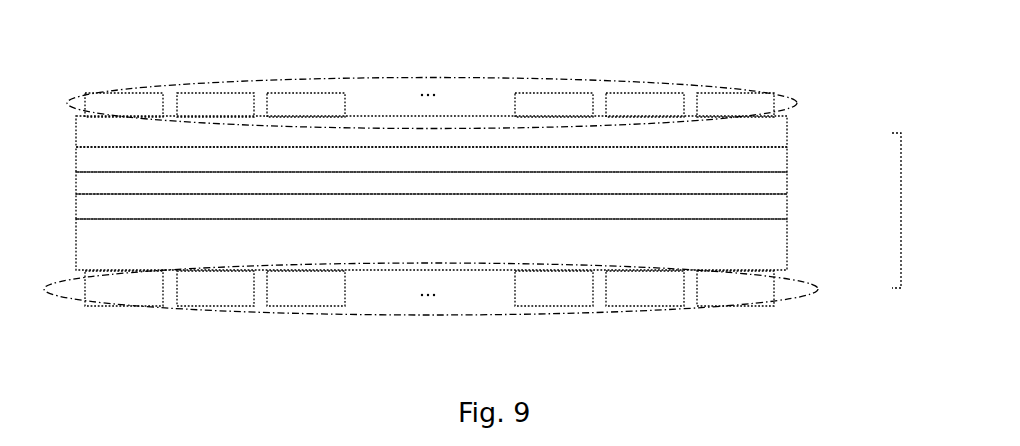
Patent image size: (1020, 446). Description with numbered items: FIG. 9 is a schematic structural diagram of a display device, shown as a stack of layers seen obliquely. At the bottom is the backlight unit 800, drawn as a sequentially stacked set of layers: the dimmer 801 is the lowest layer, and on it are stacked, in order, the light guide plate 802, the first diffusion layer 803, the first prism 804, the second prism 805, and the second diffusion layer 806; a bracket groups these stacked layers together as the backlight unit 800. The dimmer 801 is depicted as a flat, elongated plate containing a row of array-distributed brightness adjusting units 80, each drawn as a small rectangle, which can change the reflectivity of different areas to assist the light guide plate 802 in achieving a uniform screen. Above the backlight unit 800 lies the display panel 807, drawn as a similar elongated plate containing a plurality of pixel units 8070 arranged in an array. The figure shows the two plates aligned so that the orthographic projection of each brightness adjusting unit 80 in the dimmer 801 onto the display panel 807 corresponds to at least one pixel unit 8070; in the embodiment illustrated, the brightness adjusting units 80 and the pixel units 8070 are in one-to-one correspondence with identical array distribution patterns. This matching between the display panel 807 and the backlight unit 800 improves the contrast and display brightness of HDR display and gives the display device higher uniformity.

The brightness adjusting unit 80 is at (738, 292).
The backlight unit 800 is at (901, 211).
The dimmer 801 is at (820, 288).
The light guide plate 802 is at (768, 241).
The first diffusion layer 803 is at (772, 205).
The first prism 804 is at (772, 186).
The second prism 805 is at (768, 157).
The second diffusion layer 806 is at (768, 133).
The display panel 807 is at (538, 79).
The pixel unit 8070 is at (740, 110).